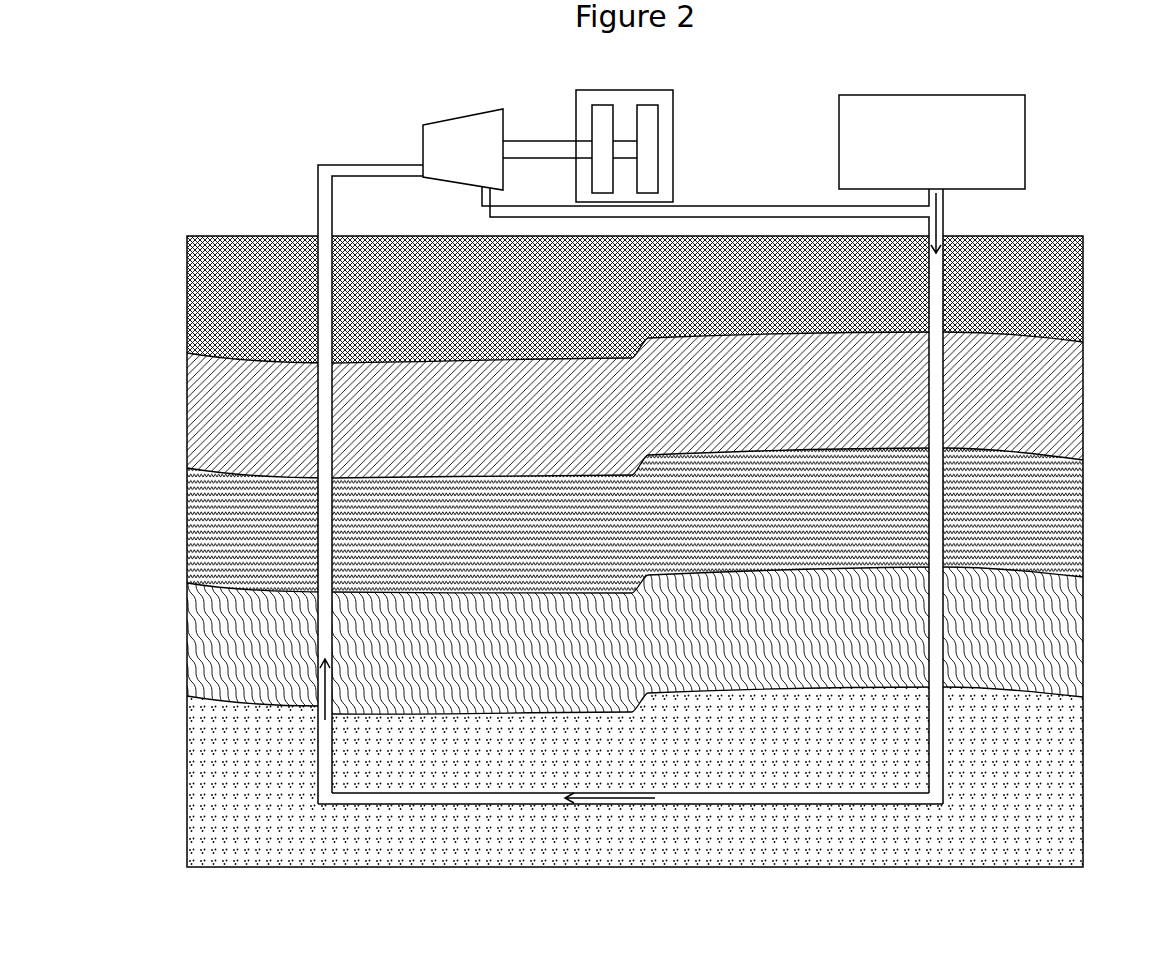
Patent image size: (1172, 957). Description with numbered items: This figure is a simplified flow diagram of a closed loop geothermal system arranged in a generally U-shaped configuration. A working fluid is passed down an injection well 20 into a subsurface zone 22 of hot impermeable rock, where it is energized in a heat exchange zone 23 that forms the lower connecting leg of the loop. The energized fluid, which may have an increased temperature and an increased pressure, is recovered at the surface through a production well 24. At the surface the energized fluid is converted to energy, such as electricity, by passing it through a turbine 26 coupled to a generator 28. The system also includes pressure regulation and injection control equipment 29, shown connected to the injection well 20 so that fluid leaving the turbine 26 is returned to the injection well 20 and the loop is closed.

The injection well 20 is at (943, 427).
The subsurface zone 22 is at (281, 812).
The heat exchange zone 23 is at (558, 804).
The production well 24 is at (316, 535).
The turbine 26 is at (530, 149).
The generator 28 is at (674, 118).
The pressure regulation and injection control equipment 29 is at (932, 142).